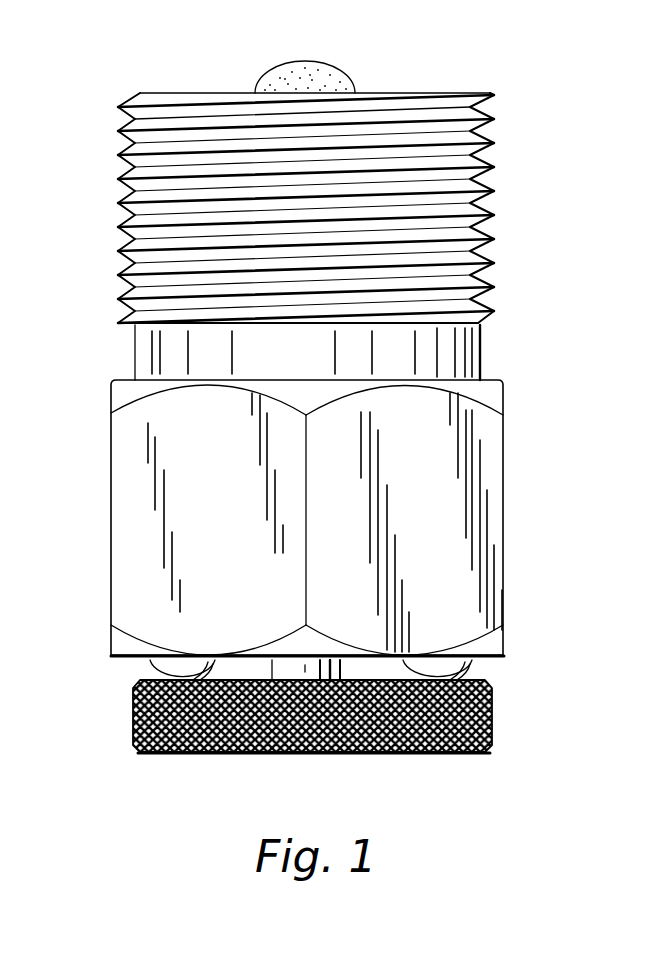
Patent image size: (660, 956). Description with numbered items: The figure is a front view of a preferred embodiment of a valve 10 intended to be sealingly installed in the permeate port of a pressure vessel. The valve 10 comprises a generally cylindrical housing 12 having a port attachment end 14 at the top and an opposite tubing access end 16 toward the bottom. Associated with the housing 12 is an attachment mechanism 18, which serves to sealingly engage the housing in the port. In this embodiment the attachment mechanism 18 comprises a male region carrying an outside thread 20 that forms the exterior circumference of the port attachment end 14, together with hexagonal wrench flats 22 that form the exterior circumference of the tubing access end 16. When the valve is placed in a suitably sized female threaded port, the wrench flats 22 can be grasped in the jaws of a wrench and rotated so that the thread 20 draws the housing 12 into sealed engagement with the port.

The valve 10 is at (100, 384).
The housing 12 is at (482, 348).
The port attachment end 14 is at (468, 85).
The tubing access end 16 is at (118, 665).
The attachment mechanism 18 is at (98, 187).
The outside thread 20 is at (128, 120).
The hexagonal wrench flats 22 is at (437, 525).